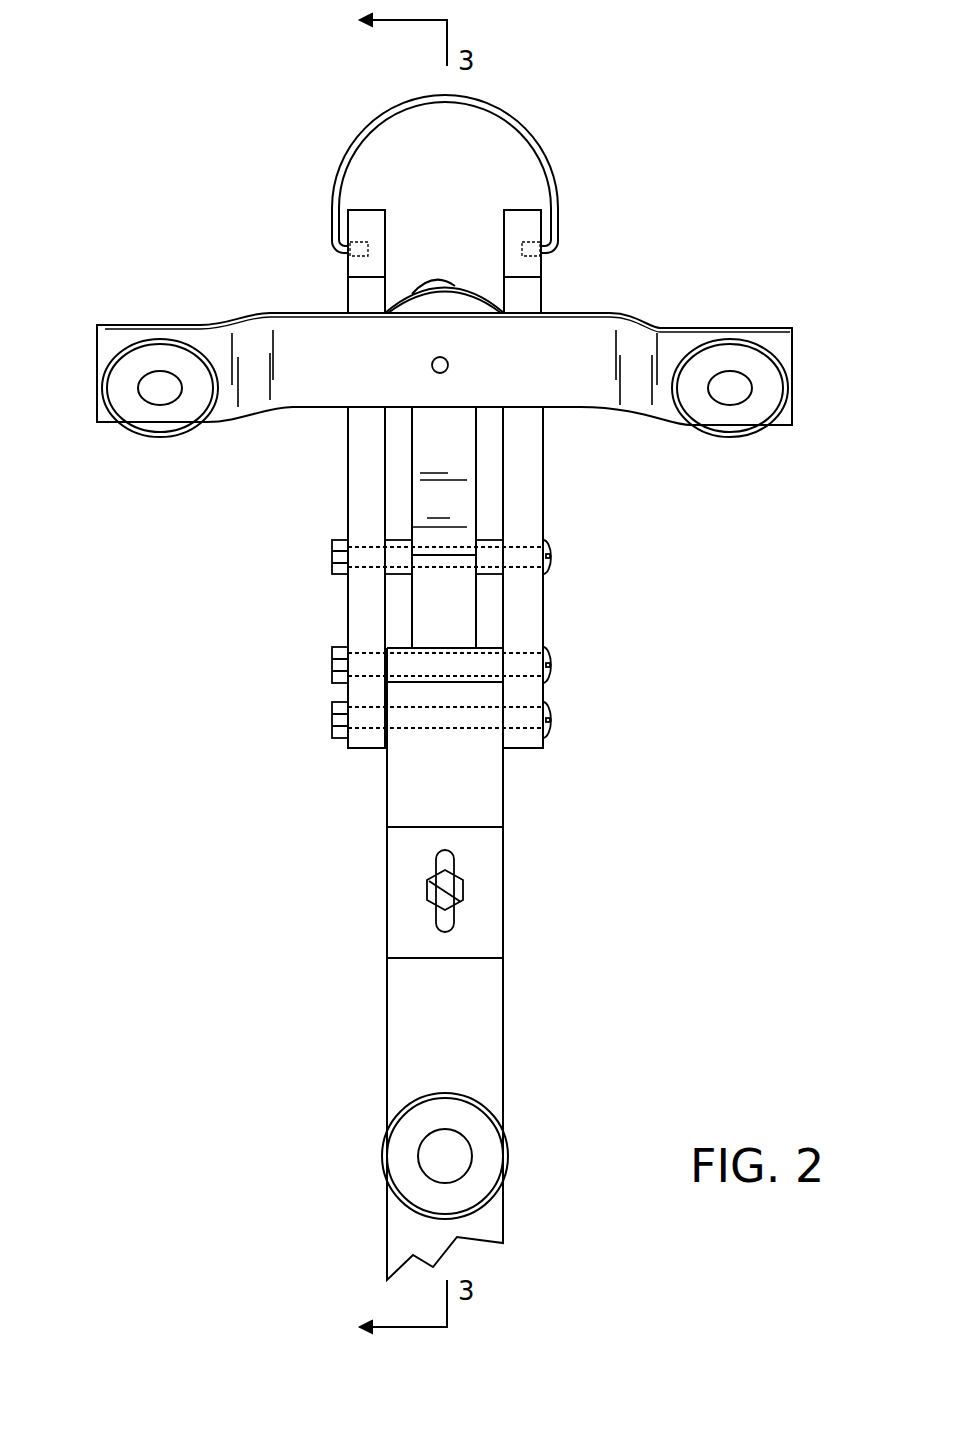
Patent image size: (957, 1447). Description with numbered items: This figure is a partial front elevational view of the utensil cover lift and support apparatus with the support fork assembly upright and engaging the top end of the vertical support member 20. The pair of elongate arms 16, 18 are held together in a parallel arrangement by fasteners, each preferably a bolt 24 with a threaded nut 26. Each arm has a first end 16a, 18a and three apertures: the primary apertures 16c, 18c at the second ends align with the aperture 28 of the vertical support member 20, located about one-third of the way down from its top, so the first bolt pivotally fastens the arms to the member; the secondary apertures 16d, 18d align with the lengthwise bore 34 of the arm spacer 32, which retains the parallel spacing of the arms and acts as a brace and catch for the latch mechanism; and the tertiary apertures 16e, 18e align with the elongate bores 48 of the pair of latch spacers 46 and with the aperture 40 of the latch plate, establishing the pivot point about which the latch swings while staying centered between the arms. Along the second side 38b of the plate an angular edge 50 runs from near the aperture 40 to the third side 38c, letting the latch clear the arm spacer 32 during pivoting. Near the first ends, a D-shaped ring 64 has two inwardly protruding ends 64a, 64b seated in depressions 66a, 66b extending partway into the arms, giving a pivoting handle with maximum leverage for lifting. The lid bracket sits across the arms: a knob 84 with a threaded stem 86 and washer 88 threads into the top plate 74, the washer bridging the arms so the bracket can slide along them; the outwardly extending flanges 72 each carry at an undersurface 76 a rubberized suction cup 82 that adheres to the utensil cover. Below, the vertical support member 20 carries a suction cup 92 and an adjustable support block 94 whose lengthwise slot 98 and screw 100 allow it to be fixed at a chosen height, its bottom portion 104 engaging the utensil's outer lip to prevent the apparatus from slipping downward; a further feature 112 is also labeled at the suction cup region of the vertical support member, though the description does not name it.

The elongate arm 16 is at (543, 440).
The first end of elongate arm 16a is at (543, 300).
The primary aperture of elongate arm 16c is at (522, 730).
The secondary aperture of elongate arm 16d is at (522, 678).
The tertiary aperture of elongate arm 16e is at (521, 548).
The elongate arm 18 is at (348, 465).
The first end of elongate arm 18a is at (348, 298).
The primary aperture of elongate arm 18c is at (362, 730).
The secondary aperture of elongate arm 18d is at (362, 652).
The tertiary aperture of elongate arm 18e is at (362, 540).
The vertical support member 20 is at (387, 1048).
The bolt 24 is at (550, 720).
The nut 26 is at (332, 735).
The aperture of vertical support member 28 is at (437, 730).
The arm spacer 32 is at (505, 648).
The bore of arm spacer 34 is at (445, 648).
The second side of flatten plate 38b is at (477, 535).
The third side of flatten plate 38c is at (432, 650).
The aperture of flatten plate 40 is at (448, 570).
The latch spacer 46 is at (395, 580).
The elongate bore of latch spacer 48 is at (393, 538).
The angular edge 50 is at (410, 612).
The D-shaped ring 64 is at (553, 140).
The protruding end of D-shaped ring 64a is at (557, 240).
The protruding end of D-shaped ring 64b is at (338, 240).
The depression 66a is at (538, 256).
The depression 66b is at (352, 256).
The extending flange 72 is at (178, 325).
The top plate 74 is at (577, 410).
The undersurface of extending flange 76 is at (97, 360).
The suction cup 82 is at (725, 438).
The knob 84 is at (450, 283).
The threaded stem 86 is at (437, 372).
The washer 88 is at (398, 298).
The suction cup 92 is at (508, 1135).
The adjustable support block 94 is at (503, 893).
The slot 98 is at (437, 918).
The screw 100 is at (430, 888).
The bottom portion of support block 104 is at (452, 958).
The axle hole 112 is at (420, 1158).